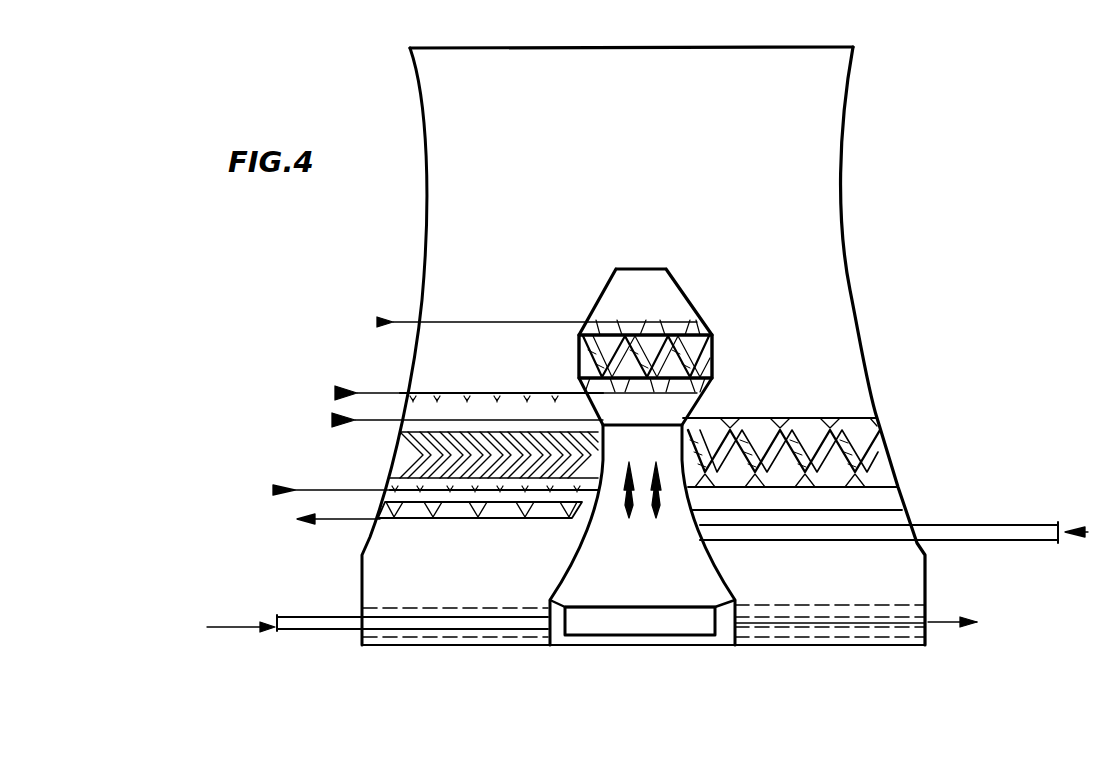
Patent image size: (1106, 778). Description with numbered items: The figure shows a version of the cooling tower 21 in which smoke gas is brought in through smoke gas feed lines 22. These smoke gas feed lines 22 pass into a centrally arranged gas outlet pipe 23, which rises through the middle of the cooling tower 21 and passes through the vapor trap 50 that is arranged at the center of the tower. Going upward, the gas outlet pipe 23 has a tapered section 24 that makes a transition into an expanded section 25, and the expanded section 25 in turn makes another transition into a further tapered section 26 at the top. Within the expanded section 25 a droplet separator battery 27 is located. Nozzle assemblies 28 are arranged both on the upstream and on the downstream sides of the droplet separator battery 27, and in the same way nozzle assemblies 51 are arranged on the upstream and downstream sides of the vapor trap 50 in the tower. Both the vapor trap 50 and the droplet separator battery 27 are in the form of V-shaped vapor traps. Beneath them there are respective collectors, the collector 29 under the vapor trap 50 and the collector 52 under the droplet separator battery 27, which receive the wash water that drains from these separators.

The cooling tower 21 is at (832, 256).
The smoke gas feed lines 22 is at (307, 625).
The gas outlet pipe 23 is at (697, 568).
The tapered section 24 is at (687, 410).
The expanded section 25 is at (712, 338).
The tapered section 26 is at (652, 297).
The droplet separator battery 27 is at (710, 357).
The nozzle assemblies 28 is at (605, 335).
The collector 29 is at (463, 512).
The vapor trap 50 is at (415, 462).
The nozzle assemblies 51 is at (508, 400).
The collector 52 is at (683, 620).